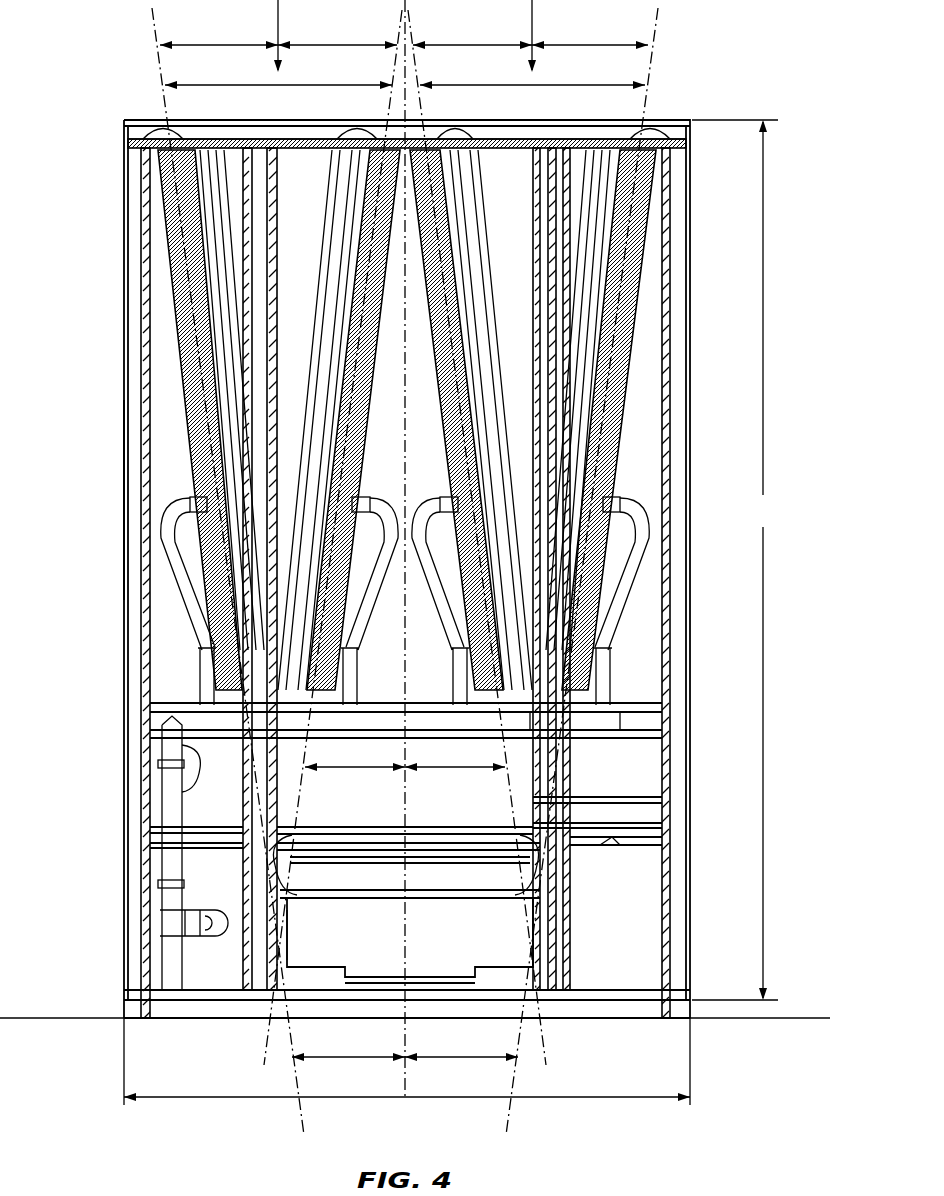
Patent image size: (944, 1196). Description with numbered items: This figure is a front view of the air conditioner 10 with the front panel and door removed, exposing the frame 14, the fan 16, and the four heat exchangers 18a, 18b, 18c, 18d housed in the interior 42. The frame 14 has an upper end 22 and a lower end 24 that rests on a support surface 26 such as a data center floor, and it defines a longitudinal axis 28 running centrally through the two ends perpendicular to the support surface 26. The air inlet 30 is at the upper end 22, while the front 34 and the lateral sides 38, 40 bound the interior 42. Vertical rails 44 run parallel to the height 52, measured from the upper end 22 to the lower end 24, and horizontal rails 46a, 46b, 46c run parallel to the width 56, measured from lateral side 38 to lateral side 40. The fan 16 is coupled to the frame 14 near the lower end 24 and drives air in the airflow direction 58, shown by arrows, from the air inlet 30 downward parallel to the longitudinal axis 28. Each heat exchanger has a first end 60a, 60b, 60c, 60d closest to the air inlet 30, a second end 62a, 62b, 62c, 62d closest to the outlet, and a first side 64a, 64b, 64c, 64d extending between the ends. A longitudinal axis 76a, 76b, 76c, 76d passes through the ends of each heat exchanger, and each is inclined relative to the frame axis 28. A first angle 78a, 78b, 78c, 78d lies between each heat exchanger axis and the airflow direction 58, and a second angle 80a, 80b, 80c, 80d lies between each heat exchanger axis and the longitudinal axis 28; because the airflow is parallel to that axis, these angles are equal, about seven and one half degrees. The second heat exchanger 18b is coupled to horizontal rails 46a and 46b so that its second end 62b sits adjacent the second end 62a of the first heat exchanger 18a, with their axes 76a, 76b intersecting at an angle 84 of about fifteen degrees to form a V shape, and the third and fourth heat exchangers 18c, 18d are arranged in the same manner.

The air conditioner 10 is at (784, 244).
The frame 14 is at (128, 632).
The fan 16 is at (317, 927).
The heat exchanger 18a is at (613, 393).
The heat exchanger 18b is at (450, 255).
The heat exchanger 18c is at (345, 430).
The heat exchanger 18d is at (190, 360).
The upper end 22 is at (665, 126).
The lower end 24 is at (165, 1020).
The support surface 26 is at (785, 1016).
The longitudinal axis 28 is at (403, 918).
The air inlet 30 is at (515, 122).
The front 34 is at (128, 713).
The lateral side 38 is at (128, 520).
The lateral side 40 is at (690, 460).
The interior 42 is at (212, 868).
The vertical rails 44 is at (135, 245).
The horizontal rail 46a is at (243, 128).
The horizontal rail 46b is at (638, 722).
The horizontal rail 46c is at (125, 997).
The height 52 is at (735, 560).
The width 56 is at (355, 1098).
The airflow direction 58 is at (278, 30).
The first end 60a is at (650, 140).
The first end 60b is at (460, 138).
The first end 60c is at (345, 138).
The first end 60d is at (165, 140).
The second end 62a is at (568, 714).
The second end 62b is at (495, 714).
The second end 62c is at (313, 714).
The second end 62d is at (232, 713).
The first side 64a is at (627, 293).
The first side 64b is at (462, 318).
The first side 64c is at (353, 293).
The first side 64d is at (190, 300).
The longitudinal axis 76a is at (658, 41).
The longitudinal axis 76b is at (512, 798).
The longitudinal axis 76c is at (300, 801).
The longitudinal axis 76d is at (156, 40).
The first angle 78a is at (588, 44).
The first angle 78b is at (428, 44).
The first angle 78c is at (334, 44).
The first angle 78d is at (226, 44).
The second angle 80a is at (468, 1053).
The second angle 80b is at (452, 768).
The second angle 80c is at (355, 768).
The second angle 80d is at (344, 1053).
The angle 84 is at (255, 85).